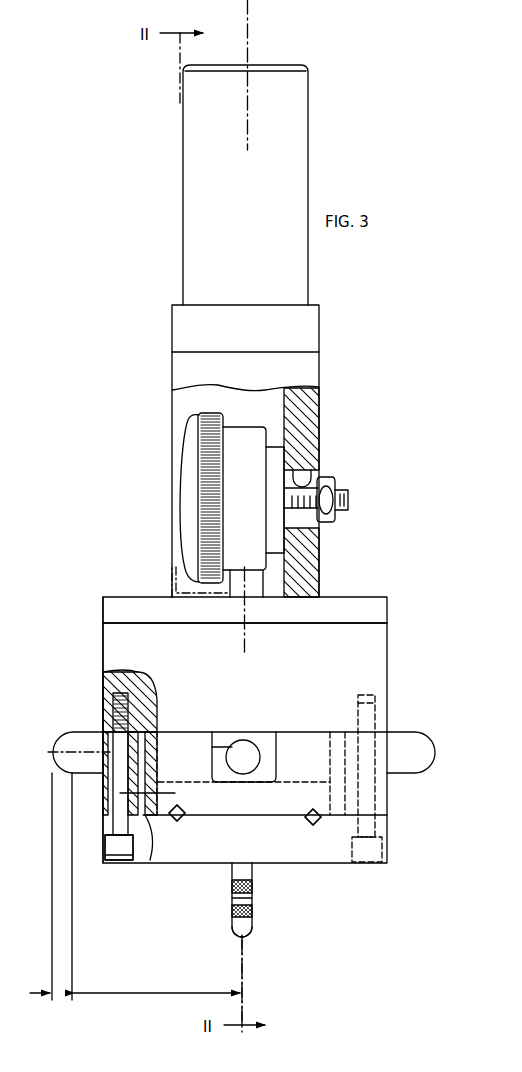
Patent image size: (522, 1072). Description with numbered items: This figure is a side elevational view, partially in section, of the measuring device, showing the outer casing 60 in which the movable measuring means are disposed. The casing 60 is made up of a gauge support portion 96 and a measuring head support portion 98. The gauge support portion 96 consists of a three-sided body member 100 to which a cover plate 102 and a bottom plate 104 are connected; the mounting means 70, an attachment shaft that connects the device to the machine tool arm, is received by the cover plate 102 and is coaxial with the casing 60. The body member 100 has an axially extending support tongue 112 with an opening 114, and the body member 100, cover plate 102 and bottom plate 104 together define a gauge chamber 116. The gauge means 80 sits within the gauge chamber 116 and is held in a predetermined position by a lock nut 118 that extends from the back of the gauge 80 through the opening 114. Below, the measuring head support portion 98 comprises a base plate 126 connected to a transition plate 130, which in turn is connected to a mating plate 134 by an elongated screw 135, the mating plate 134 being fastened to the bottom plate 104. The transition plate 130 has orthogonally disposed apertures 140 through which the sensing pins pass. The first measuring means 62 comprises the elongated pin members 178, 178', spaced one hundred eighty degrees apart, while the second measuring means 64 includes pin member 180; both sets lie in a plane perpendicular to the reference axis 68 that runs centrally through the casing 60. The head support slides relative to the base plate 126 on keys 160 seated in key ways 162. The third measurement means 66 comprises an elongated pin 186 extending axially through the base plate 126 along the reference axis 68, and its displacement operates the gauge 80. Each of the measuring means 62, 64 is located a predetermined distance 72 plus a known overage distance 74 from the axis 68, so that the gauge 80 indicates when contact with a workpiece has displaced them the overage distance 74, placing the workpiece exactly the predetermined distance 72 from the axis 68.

The outer casing 60 is at (387, 605).
The first measuring means 62 is at (78, 742).
The second measuring means 64 is at (257, 752).
The third measurement means 66 is at (286, 920).
The reference axis 68 is at (242, 977).
The mounting means 70 is at (308, 118).
The predetermined distance 72 is at (158, 993).
The overage distance 74 is at (58, 995).
The gauge means 80 is at (262, 422).
The gauge support portion 96 is at (364, 362).
The measuring head support portion 98 is at (425, 650).
The body member 100 is at (178, 370).
The cover plate 102 is at (305, 327).
The bottom plate 104 is at (101, 613).
The support tongue 112 is at (300, 418).
The opening 114 is at (304, 466).
The gauge chamber 116 is at (181, 404).
The lock nut 118 is at (330, 485).
The base plate 126 is at (148, 863).
The transition plate 130 is at (387, 800).
The mating plate 134 is at (138, 692).
The elongated screw 135 is at (162, 793).
The apertures 140 is at (208, 748).
The keys 160 is at (180, 821).
The key ways 162 is at (177, 806).
The elongated pin member 178 is at (57, 752).
The elongated pin member 178' is at (428, 746).
The pin member 180 is at (237, 742).
The elongated pin 186 is at (232, 942).